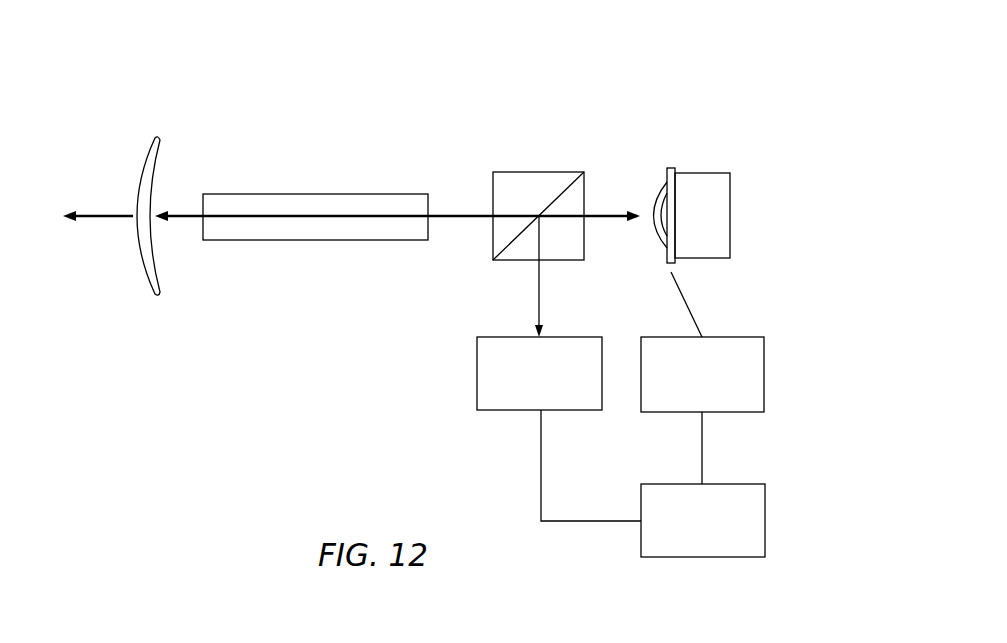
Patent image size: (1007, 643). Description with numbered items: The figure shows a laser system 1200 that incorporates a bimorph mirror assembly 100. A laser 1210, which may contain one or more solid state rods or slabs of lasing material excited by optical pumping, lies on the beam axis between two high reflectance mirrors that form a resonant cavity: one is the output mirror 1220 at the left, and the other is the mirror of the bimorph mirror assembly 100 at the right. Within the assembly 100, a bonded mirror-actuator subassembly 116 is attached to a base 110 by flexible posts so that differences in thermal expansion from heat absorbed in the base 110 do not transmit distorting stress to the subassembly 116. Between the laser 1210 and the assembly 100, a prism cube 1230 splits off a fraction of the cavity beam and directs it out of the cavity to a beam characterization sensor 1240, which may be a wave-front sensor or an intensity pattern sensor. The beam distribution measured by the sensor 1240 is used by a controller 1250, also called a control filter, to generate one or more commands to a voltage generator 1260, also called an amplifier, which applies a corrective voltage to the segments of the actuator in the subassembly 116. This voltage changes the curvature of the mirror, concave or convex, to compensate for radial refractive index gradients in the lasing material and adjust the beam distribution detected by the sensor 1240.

The laser system 1200 is at (756, 98).
The output mirror 1220 is at (141, 165).
The laser 1210 is at (388, 241).
The prism cube 1230 is at (505, 171).
The mirror-actuator subassembly 116 is at (652, 197).
The bimorph mirror assembly 100 is at (680, 184).
The base 110 is at (730, 235).
The beam characterization sensor 1240 is at (477, 395).
The voltage generator 1260 is at (764, 393).
The controller 1250 is at (765, 542).